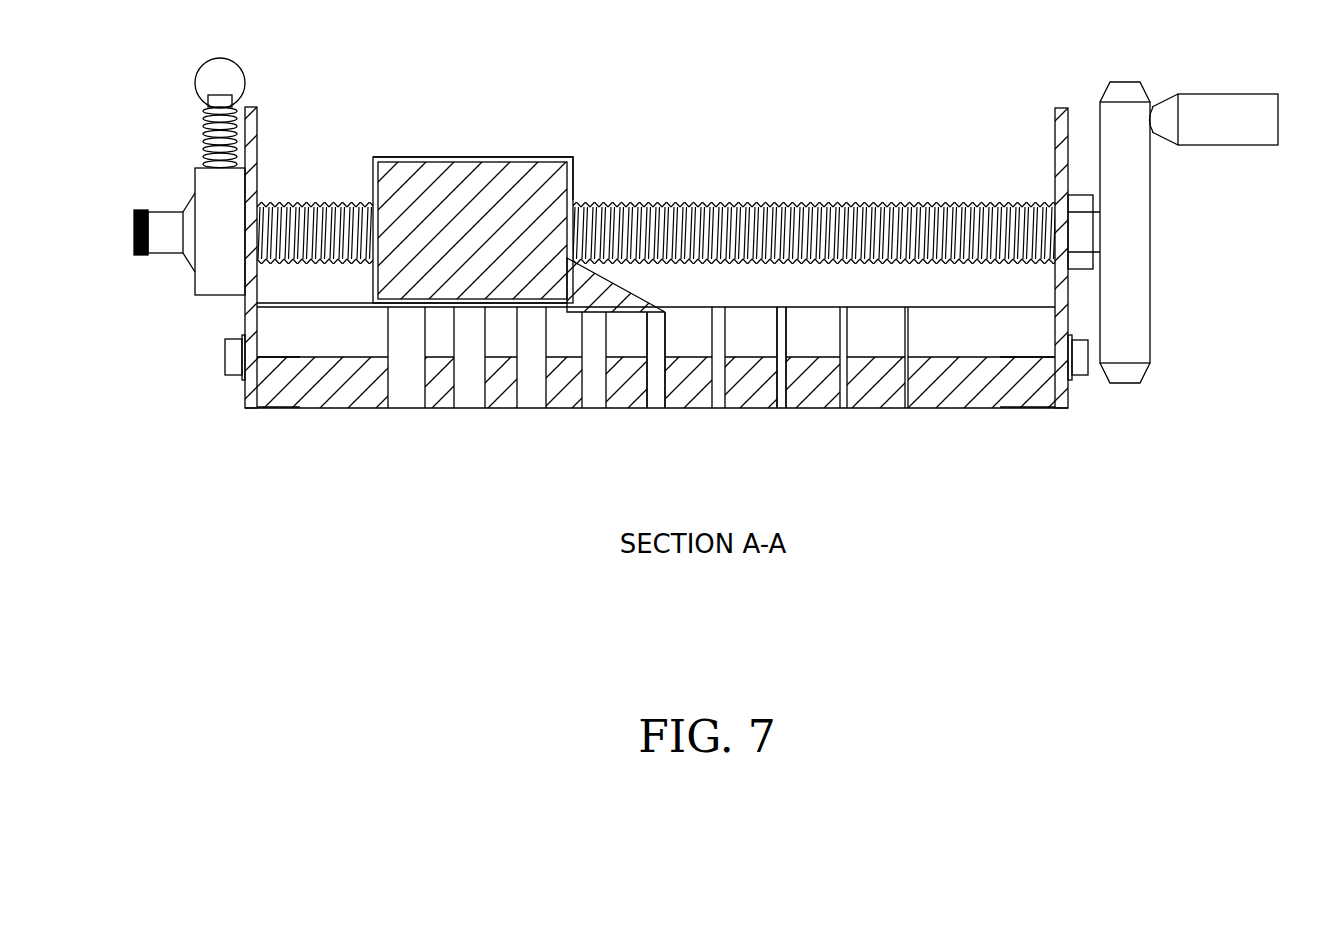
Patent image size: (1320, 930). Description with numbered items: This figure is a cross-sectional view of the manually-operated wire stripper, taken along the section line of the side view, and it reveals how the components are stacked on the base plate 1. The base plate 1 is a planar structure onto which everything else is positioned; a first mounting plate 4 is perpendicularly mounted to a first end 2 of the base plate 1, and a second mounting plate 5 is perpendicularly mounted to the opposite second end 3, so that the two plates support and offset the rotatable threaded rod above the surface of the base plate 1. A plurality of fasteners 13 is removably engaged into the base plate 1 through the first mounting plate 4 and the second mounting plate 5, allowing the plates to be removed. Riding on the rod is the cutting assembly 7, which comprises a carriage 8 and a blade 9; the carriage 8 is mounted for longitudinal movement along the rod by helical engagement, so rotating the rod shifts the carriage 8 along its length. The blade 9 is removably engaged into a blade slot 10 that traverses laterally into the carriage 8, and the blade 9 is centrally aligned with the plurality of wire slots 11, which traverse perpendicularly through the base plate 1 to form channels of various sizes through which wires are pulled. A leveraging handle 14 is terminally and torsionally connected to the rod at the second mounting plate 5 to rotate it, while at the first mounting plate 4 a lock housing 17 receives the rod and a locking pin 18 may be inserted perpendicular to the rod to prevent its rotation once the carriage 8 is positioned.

The base plate 1 is at (439, 414).
The first end 2 is at (264, 363).
The second end 3 is at (1051, 373).
The first mounting plate 4 is at (254, 108).
The second mounting plate 5 is at (1060, 112).
The cutting assembly 7 is at (364, 176).
The carriage 8 is at (472, 168).
The blade 9 is at (630, 294).
The blade slot 10 is at (576, 158).
The plurality of wire slots 11 is at (657, 397).
The plurality of fasteners 13 is at (230, 367).
The leveraging handle 14 is at (1255, 100).
The lock housing 17 is at (203, 183).
The locking pin 18 is at (217, 68).